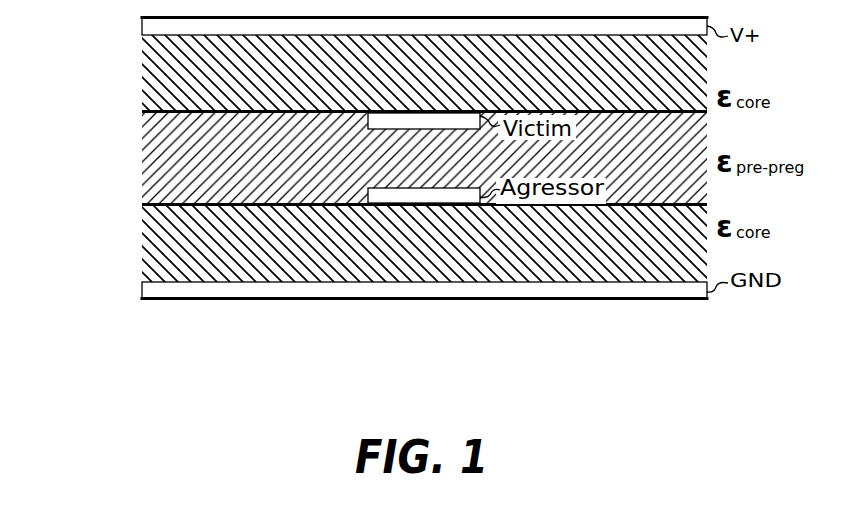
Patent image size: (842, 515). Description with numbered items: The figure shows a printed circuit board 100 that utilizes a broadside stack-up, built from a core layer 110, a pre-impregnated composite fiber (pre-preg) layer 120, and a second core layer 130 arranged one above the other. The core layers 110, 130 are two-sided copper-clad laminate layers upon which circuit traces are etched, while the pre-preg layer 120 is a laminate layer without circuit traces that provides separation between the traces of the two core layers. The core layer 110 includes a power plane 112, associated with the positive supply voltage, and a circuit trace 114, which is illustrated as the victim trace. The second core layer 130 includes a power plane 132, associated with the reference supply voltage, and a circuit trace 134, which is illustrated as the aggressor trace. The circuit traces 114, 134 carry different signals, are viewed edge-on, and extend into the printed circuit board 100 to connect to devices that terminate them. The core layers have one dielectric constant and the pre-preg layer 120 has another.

The printed circuit board 100 is at (68, 376).
The core layer 110 is at (142, 75).
The power plane 112 is at (217, 36).
The circuit trace 114 is at (387, 130).
The pre-preg layer 120 is at (142, 168).
The second core layer 130 is at (142, 252).
The power plane 132 is at (178, 281).
The circuit trace 134 is at (440, 187).